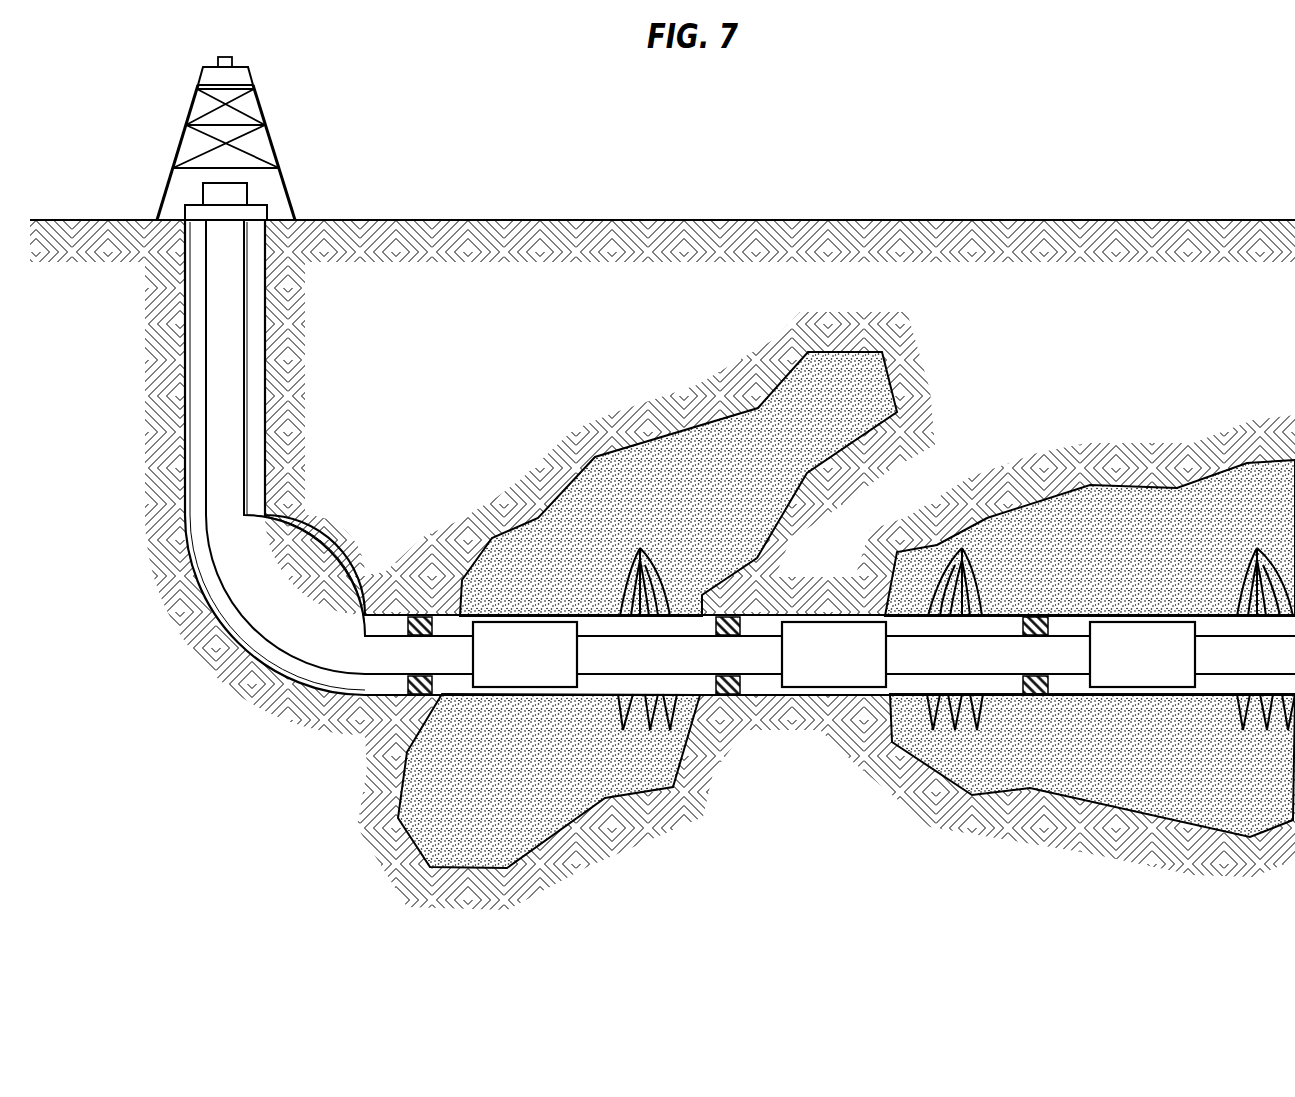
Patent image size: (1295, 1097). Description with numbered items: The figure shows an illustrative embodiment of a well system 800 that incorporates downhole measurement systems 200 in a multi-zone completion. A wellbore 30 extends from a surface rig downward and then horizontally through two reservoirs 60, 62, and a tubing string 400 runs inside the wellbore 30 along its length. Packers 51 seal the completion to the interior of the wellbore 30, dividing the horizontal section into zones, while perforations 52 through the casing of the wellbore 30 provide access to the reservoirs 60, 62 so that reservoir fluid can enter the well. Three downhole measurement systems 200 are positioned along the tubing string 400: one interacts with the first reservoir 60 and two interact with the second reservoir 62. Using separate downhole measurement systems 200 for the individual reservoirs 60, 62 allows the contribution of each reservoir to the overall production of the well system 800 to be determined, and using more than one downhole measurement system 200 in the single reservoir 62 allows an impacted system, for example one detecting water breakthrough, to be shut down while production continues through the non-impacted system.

The well system 800 is at (320, 136).
The wellbore 30 is at (186, 341).
The tubing string 400 is at (233, 413).
The packer 51 is at (416, 616).
The perforations 52 is at (640, 549).
The downhole measurement system 200 is at (552, 669).
The reservoir 60 is at (539, 789).
The reservoir 62 is at (1204, 784).